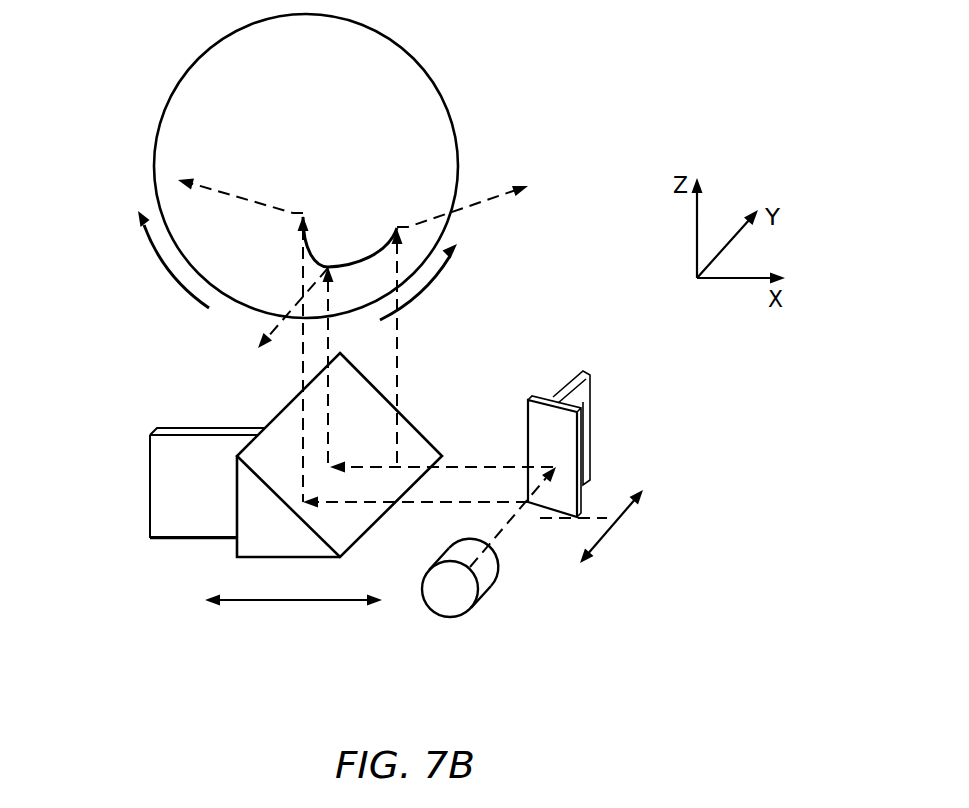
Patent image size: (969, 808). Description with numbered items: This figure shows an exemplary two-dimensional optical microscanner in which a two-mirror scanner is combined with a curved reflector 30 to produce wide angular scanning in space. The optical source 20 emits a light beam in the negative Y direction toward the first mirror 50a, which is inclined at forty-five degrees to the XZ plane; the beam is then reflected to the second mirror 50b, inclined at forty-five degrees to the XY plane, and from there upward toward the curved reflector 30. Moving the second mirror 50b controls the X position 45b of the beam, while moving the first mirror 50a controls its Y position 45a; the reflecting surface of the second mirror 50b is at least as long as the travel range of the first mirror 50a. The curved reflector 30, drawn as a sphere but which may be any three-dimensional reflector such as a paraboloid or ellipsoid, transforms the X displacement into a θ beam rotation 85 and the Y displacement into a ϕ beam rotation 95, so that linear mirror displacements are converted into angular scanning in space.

The curved reflector 30 is at (152, 165).
The ϕ beam rotation 95 is at (155, 253).
The θ beam rotation 85 is at (432, 282).
The mirror M2 50b is at (282, 410).
The mirror M1 50a is at (578, 448).
The Y position 45a is at (612, 525).
The X position 45b is at (235, 600).
The optical source 20 is at (460, 618).